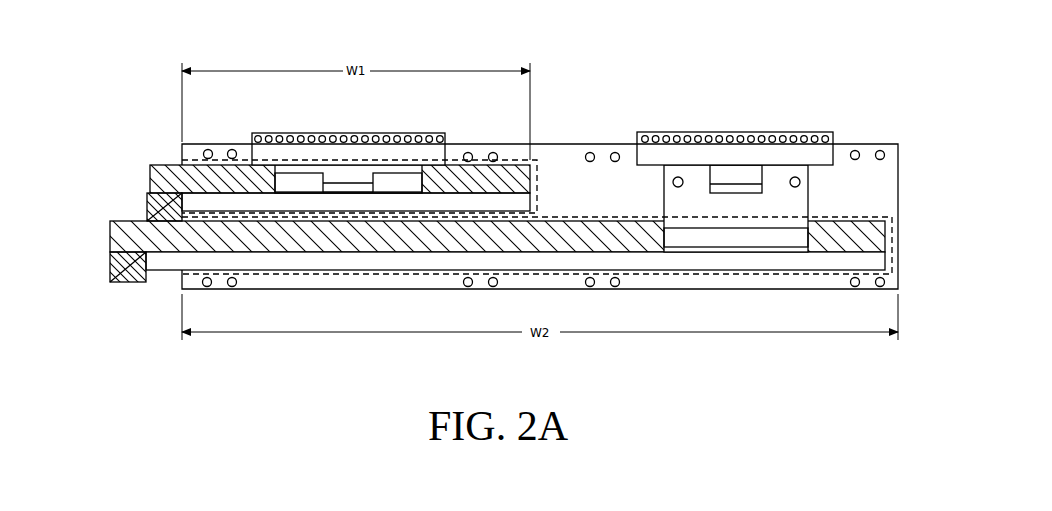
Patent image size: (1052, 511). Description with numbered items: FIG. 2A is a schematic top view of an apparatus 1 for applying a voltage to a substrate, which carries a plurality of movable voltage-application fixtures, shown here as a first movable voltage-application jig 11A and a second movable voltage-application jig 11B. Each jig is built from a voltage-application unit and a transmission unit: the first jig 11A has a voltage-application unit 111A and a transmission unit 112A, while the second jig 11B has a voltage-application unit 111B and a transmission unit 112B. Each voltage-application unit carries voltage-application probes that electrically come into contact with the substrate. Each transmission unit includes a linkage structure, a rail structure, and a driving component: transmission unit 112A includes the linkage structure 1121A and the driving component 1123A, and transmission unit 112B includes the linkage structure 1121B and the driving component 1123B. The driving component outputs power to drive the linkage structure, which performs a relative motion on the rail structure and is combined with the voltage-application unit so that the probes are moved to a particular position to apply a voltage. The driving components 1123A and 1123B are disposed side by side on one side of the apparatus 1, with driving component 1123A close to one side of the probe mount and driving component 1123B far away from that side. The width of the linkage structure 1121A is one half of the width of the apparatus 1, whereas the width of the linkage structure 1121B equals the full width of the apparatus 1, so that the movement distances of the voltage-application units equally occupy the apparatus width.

The apparatus for applying a voltage to a substrate 1 is at (158, 50).
The first movable voltage-application jig 11A is at (341, 152).
The voltage-application unit 111A is at (214, 120).
The transmission unit 112A is at (178, 158).
The driving component 1123A is at (147, 203).
The linkage structure 1121A is at (543, 143).
The second movable voltage-application jig 11B is at (565, 166).
The voltage-application unit 111B is at (777, 120).
The transmission unit 112B is at (832, 200).
The driving component 1123B is at (110, 264).
The linkage structure 1121B is at (877, 217).